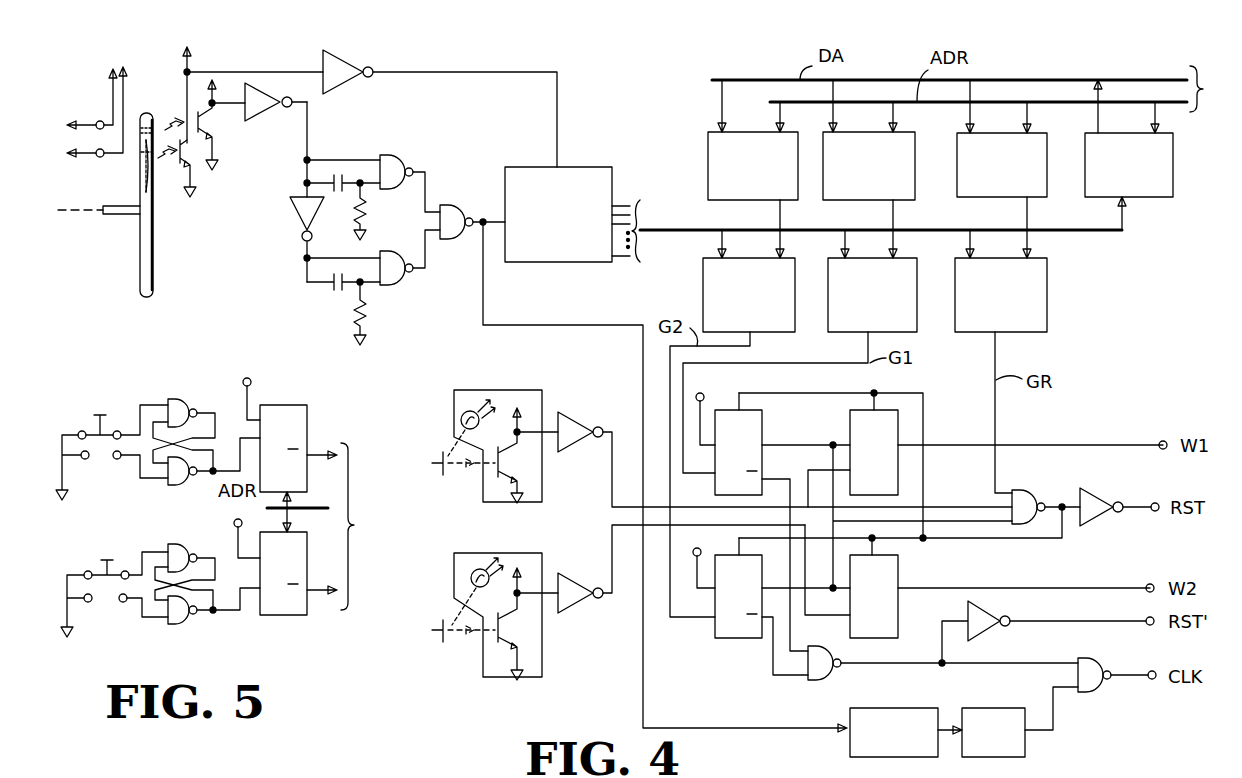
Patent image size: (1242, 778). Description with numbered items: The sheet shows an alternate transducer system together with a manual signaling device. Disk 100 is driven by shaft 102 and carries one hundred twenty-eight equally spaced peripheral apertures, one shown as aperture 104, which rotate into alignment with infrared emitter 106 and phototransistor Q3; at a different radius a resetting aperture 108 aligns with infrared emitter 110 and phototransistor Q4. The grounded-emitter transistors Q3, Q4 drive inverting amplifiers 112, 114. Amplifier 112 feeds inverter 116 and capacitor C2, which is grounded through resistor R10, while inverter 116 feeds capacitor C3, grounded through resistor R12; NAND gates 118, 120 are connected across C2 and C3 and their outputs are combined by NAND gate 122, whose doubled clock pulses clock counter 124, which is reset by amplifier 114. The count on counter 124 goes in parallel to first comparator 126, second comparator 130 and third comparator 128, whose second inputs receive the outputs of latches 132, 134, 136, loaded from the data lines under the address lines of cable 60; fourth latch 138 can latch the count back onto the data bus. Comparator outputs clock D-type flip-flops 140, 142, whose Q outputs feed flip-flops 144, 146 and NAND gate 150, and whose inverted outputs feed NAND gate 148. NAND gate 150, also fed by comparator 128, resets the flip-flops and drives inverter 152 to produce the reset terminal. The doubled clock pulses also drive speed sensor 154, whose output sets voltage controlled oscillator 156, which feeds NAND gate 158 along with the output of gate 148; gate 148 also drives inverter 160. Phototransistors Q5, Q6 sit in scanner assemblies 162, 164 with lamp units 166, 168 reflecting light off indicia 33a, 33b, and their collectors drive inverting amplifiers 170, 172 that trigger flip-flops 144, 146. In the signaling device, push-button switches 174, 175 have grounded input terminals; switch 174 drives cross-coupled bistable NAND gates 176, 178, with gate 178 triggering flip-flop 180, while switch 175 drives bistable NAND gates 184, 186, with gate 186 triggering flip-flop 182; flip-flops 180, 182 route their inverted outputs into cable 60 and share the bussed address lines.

In FIG. 4, the alternate disk 100 is at (153, 290).
In FIG. 4, the shaft 102 is at (120, 214).
In FIG. 4, the aperture 104 is at (148, 122).
In FIG. 4, the infrared emitter 106 is at (101, 121).
In FIG. 4, the resetting aperture 108 is at (153, 190).
In FIG. 4, the infrared emitter 110 is at (100, 158).
In FIG. 4, the inverting amplifier 112 is at (255, 119).
In FIG. 4, the inverting amplifier 114 is at (344, 54).
In FIG. 4, the inverter 116 is at (298, 219).
In FIG. 4, the NAND gate 118 is at (394, 155).
In FIG. 4, the NAND gate 120 is at (406, 279).
In FIG. 4, the NAND gate 122 is at (478, 185).
In FIG. 4, the counter 124 is at (582, 165).
In FIG. 4, the first comparator 126 is at (917, 310).
In FIG. 4, the third comparator 128 is at (1047, 300).
In FIG. 4, the second comparator 130 is at (703, 288).
In FIG. 4, the latch 132 is at (915, 183).
In FIG. 4, the latch 134 is at (1047, 183).
In FIG. 4, the latch 136 is at (708, 180).
In FIG. 4, the fourth latch 138 is at (1173, 190).
In FIG. 4, the D-type flip-flop 140 is at (763, 420).
In FIG. 4, the D-type flip-flop 142 is at (750, 640).
In FIG. 4, the D-type flip-flop 144 is at (850, 426).
In FIG. 4, the D-type flip-flop 146 is at (898, 576).
In FIG. 4, the NAND gate 148 is at (844, 692).
In FIG. 4, the NAND gate 150 is at (1074, 470).
In FIG. 4, the inverter 152 is at (1097, 492).
In FIG. 4, the speed sensor 154 is at (850, 750).
In FIG. 4, the voltage controlled oscillator 156 is at (1025, 748).
In FIG. 4, the NAND gate 158 is at (1098, 692).
In FIG. 4, the inverter 160 is at (1002, 610).
In FIG. 4, the scanner assembly 162 is at (482, 442).
In FIG. 4, the scanner assembly 164 is at (493, 616).
In FIG. 4, the lamp unit 166 is at (495, 372).
In FIG. 4, the lamp unit 168 is at (472, 572).
In FIG. 4, the inverting amplifier 170 is at (580, 415).
In FIG. 4, the inverting amplifier 172 is at (600, 555).
In FIG. 5, the push-button switch 174 is at (120, 380).
In FIG. 5, the push-button switch 175 is at (120, 542).
In FIG. 5, the NAND gate 176 is at (210, 380).
In FIG. 5, the NAND gate 178 is at (185, 486).
In FIG. 5, the D-type flip-flop 180 is at (285, 405).
In FIG. 5, the D-type flip-flop 182 is at (287, 618).
In FIG. 5, the NAND gate 184 is at (178, 540).
In FIG. 5, the NAND gate 186 is at (178, 624).
In FIG. 4, the cable 60 is at (973, 89).
In FIG. 5, the cable 60 is at (324, 526).
In FIG. 4, the indicia 33a is at (441, 460).
In FIG. 4, the indicia 33b is at (440, 633).
In FIG. 4, the phototransistor Q3 is at (212, 135).
In FIG. 4, the phototransistor Q4 is at (190, 172).
In FIG. 4, the phototransistor Q5 is at (490, 478).
In FIG. 4, the phototransistor Q6 is at (490, 643).
In FIG. 4, the capacitor C2 is at (346, 170).
In FIG. 4, the capacitor C3 is at (337, 290).
In FIG. 4, the grounding resistor R10 is at (364, 218).
In FIG. 4, the grounding resistor R12 is at (365, 318).